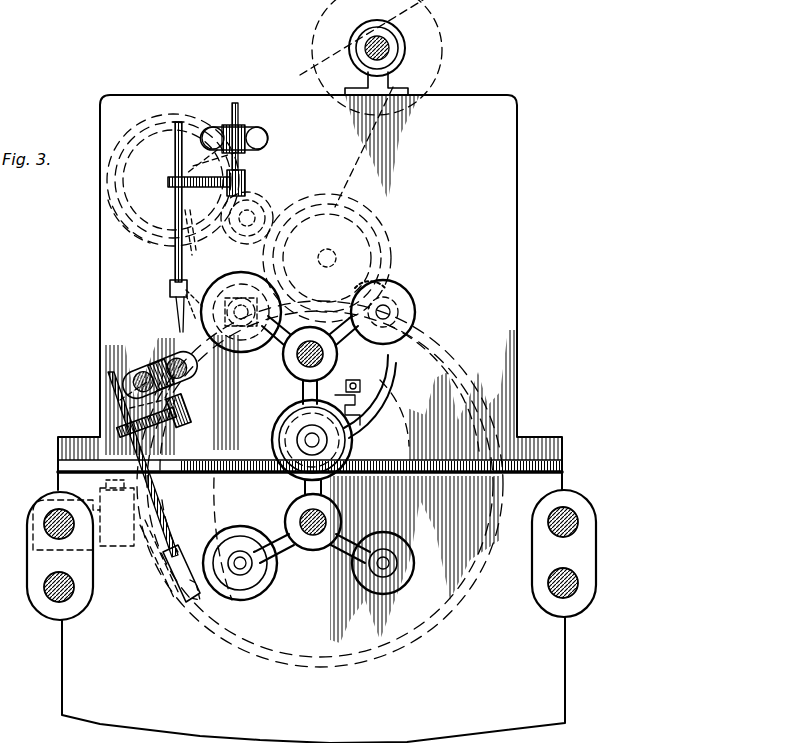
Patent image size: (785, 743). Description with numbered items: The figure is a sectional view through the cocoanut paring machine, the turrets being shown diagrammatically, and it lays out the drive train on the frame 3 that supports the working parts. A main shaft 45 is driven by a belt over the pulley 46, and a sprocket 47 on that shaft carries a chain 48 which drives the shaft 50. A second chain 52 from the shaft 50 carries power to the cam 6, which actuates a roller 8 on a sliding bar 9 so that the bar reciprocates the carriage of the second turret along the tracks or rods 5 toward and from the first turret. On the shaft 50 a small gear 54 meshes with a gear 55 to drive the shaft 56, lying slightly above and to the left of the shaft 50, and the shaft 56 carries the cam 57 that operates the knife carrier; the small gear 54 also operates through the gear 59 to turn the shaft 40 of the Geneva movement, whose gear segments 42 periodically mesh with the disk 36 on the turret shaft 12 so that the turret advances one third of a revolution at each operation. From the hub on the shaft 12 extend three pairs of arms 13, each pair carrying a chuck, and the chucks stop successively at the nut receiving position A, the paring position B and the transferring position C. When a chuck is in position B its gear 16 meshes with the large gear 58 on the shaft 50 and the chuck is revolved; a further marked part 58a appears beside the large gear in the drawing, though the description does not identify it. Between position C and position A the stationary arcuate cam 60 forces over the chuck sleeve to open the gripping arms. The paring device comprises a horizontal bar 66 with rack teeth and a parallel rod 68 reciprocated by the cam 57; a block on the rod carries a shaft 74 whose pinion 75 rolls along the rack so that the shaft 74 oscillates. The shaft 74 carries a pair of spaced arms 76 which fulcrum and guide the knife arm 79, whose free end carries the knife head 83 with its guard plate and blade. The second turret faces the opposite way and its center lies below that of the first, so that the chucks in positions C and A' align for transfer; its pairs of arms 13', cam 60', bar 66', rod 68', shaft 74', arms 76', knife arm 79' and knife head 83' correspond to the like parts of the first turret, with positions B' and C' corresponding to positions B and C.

The frame 3 is at (326, 419).
The tracks or rods 5 is at (575, 560).
The cam 6 is at (398, 648).
The roller 8 is at (128, 505).
The bar 9 is at (46, 526).
The shaft 12 is at (324, 354).
The pairs of arms 13 is at (315, 377).
The pairs of arms 13' is at (312, 528).
The gear 16 is at (243, 300).
The disk 36 is at (295, 362).
The shaft 40 is at (334, 252).
The gear segments 42 is at (380, 282).
The main shaft 45 is at (386, 40).
The pulley 46 is at (438, 60).
The sprocket 47 is at (373, 30).
The chain 48 is at (300, 78).
The shaft 50 is at (253, 212).
The chain 52 is at (292, 232).
The small gear 54 is at (250, 208).
The gear 55 is at (133, 226).
The shaft 56 is at (168, 178).
The cam 57 is at (125, 195).
The large gear 58 is at (172, 258).
The link 58a is at (200, 230).
The gear 59 is at (392, 242).
The stationary arcuate cam 60 is at (319, 438).
The stationary arcuate cam 60' is at (241, 533).
The bar 66 is at (245, 130).
The bar 66' is at (160, 360).
The rod 68 is at (212, 121).
The rod 68' is at (111, 374).
The shaft 74 is at (243, 121).
The shaft 74' is at (138, 341).
The pinion 75 is at (258, 118).
The arms 76 is at (206, 193).
The arms 76' is at (126, 420).
The knife arm 79 is at (148, 192).
The knife arm 79' is at (116, 464).
The knife head 83 is at (176, 305).
The knife head 83' is at (170, 568).
The nut receiving position A is at (344, 390).
The nut receiving position A' is at (328, 440).
The paring position B is at (241, 300).
The paring position B' is at (240, 571).
The discharging or transferring position C is at (331, 440).
The discharging or transferring position C' is at (390, 566).